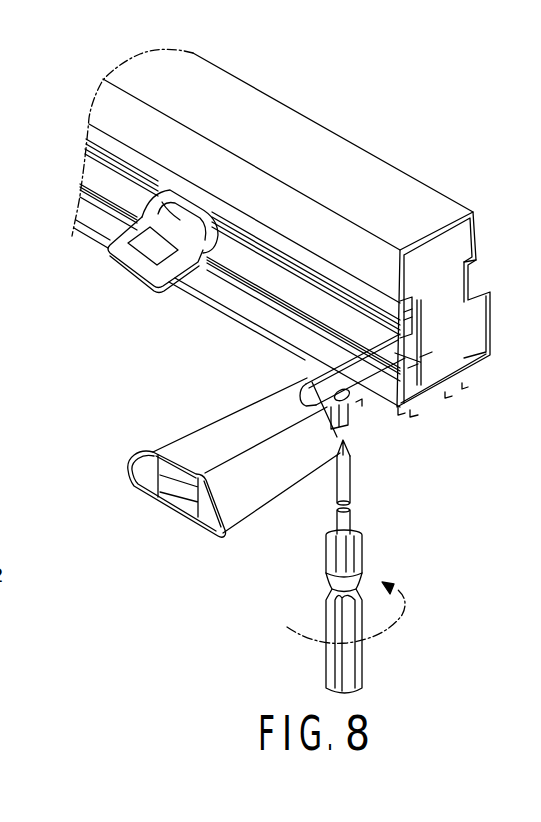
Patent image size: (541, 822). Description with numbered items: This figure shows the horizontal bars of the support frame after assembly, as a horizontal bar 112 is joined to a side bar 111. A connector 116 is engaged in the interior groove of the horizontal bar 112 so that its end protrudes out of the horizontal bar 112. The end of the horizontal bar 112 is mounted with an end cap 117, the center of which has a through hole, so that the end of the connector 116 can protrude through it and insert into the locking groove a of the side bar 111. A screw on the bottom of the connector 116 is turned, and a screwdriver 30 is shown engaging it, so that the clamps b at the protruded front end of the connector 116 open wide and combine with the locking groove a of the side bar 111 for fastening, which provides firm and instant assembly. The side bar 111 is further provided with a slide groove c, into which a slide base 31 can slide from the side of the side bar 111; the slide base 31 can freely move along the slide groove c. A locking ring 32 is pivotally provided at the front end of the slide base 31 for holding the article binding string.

The side bar 111 is at (333, 167).
The end cap 117 is at (370, 323).
The slide base 31 is at (180, 210).
The locking ring 32 is at (128, 268).
The horizontal bar 112 is at (237, 412).
The connector 116 is at (367, 415).
The slide groove c is at (407, 317).
The locking groove a is at (420, 360).
The clamps b is at (414, 364).
The screwdriver 30 is at (335, 605).